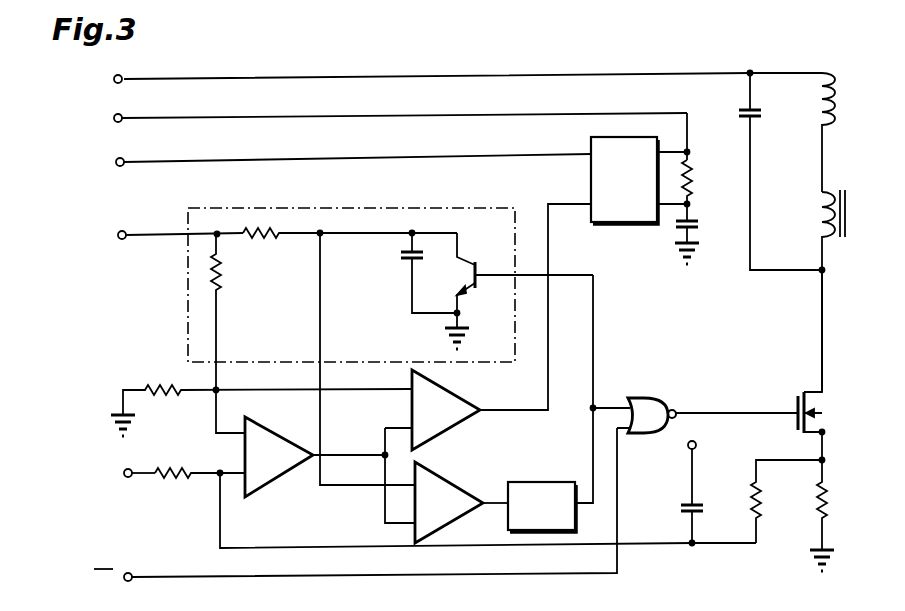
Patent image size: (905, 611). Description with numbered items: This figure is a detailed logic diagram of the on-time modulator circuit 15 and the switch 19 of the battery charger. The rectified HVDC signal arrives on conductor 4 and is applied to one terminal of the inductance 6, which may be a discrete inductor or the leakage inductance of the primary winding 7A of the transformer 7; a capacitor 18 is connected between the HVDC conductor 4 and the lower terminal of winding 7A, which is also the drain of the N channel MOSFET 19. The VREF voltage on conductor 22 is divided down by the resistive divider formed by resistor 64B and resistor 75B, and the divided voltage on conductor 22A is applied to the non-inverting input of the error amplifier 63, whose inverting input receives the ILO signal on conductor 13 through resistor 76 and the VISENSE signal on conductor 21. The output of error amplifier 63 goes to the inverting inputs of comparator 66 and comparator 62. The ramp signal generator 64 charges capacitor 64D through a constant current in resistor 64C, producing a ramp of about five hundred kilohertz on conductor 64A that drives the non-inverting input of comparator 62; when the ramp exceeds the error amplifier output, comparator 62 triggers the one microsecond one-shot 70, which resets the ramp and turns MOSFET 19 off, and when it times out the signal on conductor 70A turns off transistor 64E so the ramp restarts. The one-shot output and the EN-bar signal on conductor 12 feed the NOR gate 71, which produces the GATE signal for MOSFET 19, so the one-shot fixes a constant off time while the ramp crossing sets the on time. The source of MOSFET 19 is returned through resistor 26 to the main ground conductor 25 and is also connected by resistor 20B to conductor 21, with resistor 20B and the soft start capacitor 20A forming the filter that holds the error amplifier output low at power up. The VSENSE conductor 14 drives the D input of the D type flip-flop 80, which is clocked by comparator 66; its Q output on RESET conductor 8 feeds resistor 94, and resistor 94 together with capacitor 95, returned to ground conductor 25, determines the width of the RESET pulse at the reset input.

The on-time modulator circuit 15 is at (312, 38).
The HVDC conductor 4 is at (122, 77).
The RESET conductor 8 is at (122, 116).
The VSENSE conductor 14 is at (124, 160).
The VREF conductor 22 is at (126, 233).
The ILO conductor 13 is at (130, 468).
The EN-bar conductor 12 is at (130, 572).
The capacitor 18 is at (758, 108).
The inductance 6 is at (838, 78).
The transformer 7 is at (834, 183).
The primary winding 7A is at (812, 203).
The D type flip-flop 80 is at (628, 225).
The resistor 94 is at (692, 166).
The capacitor 95 is at (698, 225).
The ramp signal generator 64 is at (356, 194).
The ramp conductor 64A is at (323, 424).
The resistor 64B is at (222, 268).
The resistor 64C is at (272, 229).
The capacitor 64D is at (400, 255).
The transistor 64E is at (478, 262).
The resistor 75B is at (170, 368).
The divided VREF conductor 22A is at (219, 410).
The resistor 76 is at (176, 468).
The error amplifier 63 is at (284, 418).
The VISENSE conductor 21 is at (223, 538).
The comparator 66 is at (465, 380).
The comparator 62 is at (447, 478).
The one-shot circuit 70 is at (578, 482).
The one-shot output conductor 70A is at (593, 355).
The NOR gate 71 is at (655, 398).
The N channel MOSFET switch 19 is at (797, 395).
The resistor 26 is at (816, 498).
The main ground conductor 25 is at (810, 549).
The soft start capacitor 20A is at (716, 490).
The resistor 20B is at (750, 514).